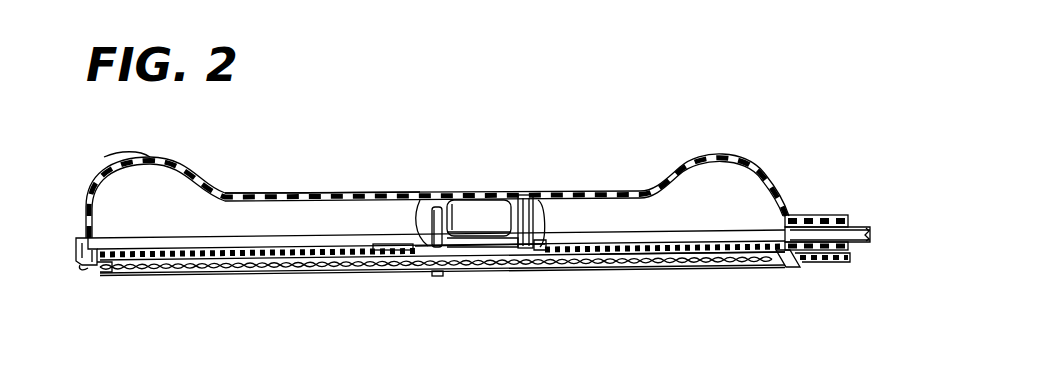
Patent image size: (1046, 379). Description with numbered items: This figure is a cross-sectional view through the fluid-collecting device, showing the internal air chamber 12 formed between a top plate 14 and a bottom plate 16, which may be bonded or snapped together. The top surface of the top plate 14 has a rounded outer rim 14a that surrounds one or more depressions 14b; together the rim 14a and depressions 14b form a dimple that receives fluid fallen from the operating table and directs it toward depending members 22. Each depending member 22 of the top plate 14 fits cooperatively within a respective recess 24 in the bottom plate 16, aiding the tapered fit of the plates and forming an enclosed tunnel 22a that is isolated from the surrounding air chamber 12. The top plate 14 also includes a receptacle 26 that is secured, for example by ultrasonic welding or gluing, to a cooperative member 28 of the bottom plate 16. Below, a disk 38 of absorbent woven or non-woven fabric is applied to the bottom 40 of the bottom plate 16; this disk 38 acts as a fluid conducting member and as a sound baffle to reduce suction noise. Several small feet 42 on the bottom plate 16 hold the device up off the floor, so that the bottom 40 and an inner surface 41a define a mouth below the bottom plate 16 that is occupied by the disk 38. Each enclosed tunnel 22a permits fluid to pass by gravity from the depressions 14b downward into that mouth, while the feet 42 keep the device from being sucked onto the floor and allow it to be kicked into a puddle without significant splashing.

The air chamber 12 is at (325, 215).
The top plate 14 is at (108, 176).
The rounded outer rim 14a is at (138, 158).
The depressions 14b is at (249, 191).
The bottom plate 16 is at (83, 263).
The depending members 22 is at (506, 205).
The enclosed tunnels 22a is at (535, 210).
The recesses 24 is at (543, 251).
The receptacle 26 is at (419, 210).
The cooperative member 28 is at (438, 250).
The disk 38 is at (215, 270).
The bottom 40 is at (680, 258).
The inner surface 41a is at (102, 268).
The feet 42 is at (88, 269).